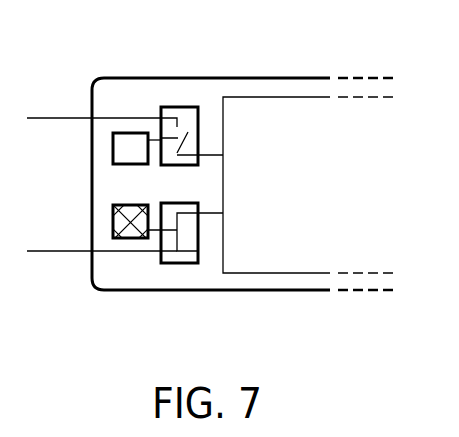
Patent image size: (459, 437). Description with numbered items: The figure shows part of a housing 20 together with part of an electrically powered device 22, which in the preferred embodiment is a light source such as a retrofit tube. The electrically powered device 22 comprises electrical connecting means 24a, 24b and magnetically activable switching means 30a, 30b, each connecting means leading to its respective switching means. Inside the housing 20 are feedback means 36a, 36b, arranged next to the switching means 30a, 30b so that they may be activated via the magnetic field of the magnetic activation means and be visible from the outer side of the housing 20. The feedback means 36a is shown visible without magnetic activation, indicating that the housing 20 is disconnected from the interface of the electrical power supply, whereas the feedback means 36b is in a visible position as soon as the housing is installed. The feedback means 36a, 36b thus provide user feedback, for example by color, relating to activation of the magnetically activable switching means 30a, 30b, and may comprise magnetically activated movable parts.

The housing 20 is at (277, 78).
The electrically powered device 22 is at (315, 97).
The electrical connecting means 24a is at (52, 118).
The electrical connecting means 24b is at (67, 251).
The magnetically activable switching means 30a is at (178, 107).
The magnetically activable switching means 30b is at (180, 263).
The feedback means 36a is at (113, 146).
The feedback means 36b is at (113, 222).